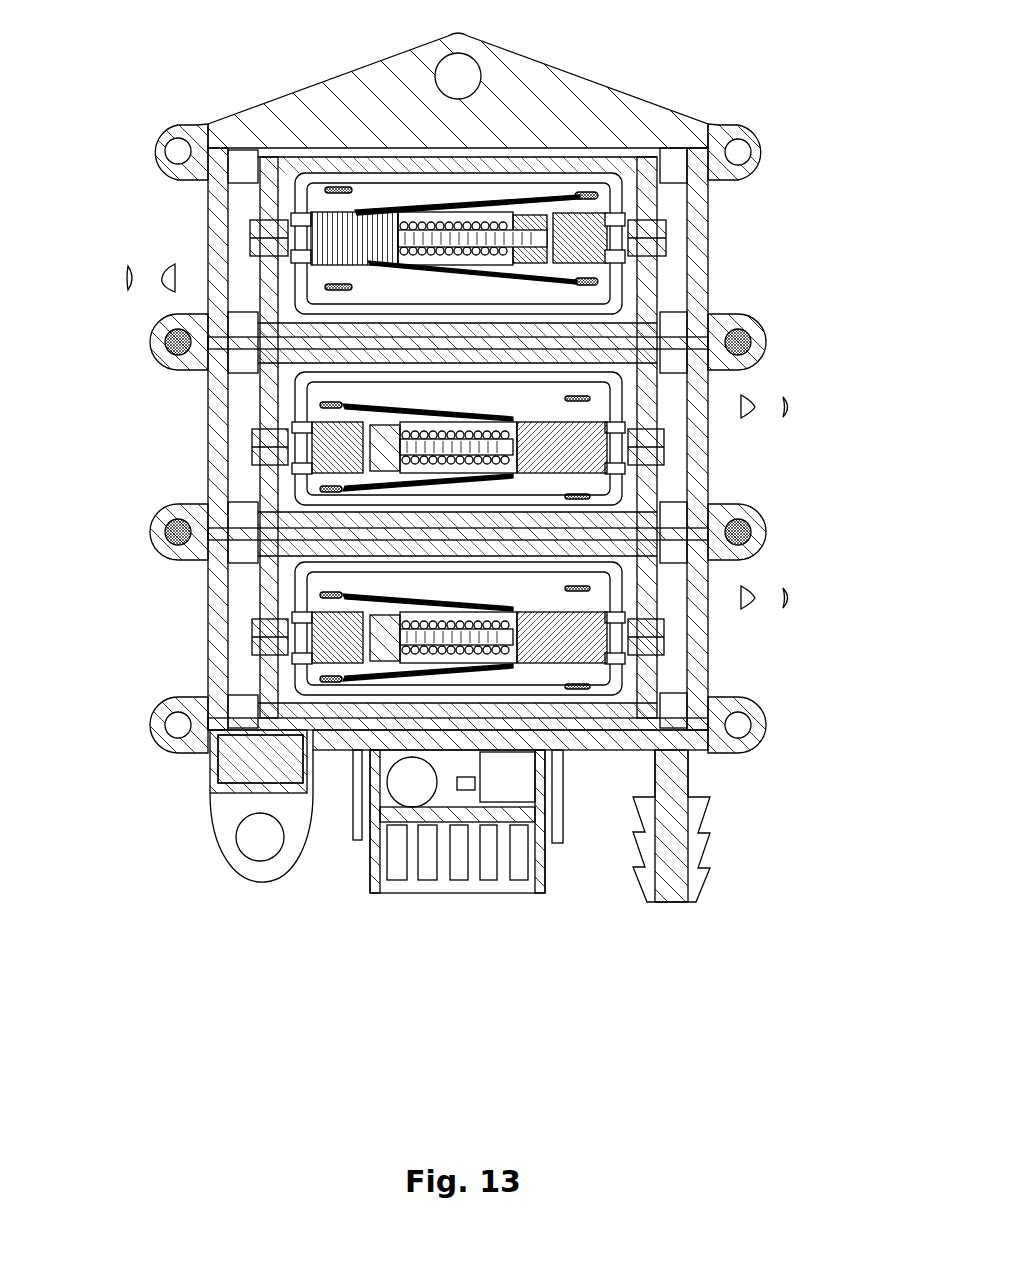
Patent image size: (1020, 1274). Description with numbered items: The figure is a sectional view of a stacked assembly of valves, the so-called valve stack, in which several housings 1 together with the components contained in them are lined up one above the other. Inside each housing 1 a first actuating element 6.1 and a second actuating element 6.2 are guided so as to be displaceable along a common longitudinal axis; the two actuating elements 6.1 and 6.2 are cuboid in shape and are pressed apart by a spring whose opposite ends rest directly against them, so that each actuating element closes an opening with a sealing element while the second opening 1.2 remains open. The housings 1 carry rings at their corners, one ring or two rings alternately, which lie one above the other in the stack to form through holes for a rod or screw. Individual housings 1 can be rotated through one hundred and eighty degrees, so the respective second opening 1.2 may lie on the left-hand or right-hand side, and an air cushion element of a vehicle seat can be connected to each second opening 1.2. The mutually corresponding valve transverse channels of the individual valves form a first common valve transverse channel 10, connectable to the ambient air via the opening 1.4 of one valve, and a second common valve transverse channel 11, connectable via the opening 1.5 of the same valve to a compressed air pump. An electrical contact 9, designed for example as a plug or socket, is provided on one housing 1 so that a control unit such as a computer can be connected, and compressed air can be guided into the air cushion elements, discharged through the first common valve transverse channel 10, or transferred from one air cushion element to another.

The housing 1 is at (717, 153).
The second opening 1.2 is at (165, 268).
The opening 1.4 is at (247, 712).
The opening 1.5 is at (672, 723).
The first actuating element 6.1 is at (345, 237).
The second actuating element 6.2 is at (660, 240).
The electrical contact 9 is at (442, 882).
The first common valve transverse channel 10 is at (673, 268).
The second common valve transverse channel 11 is at (243, 600).